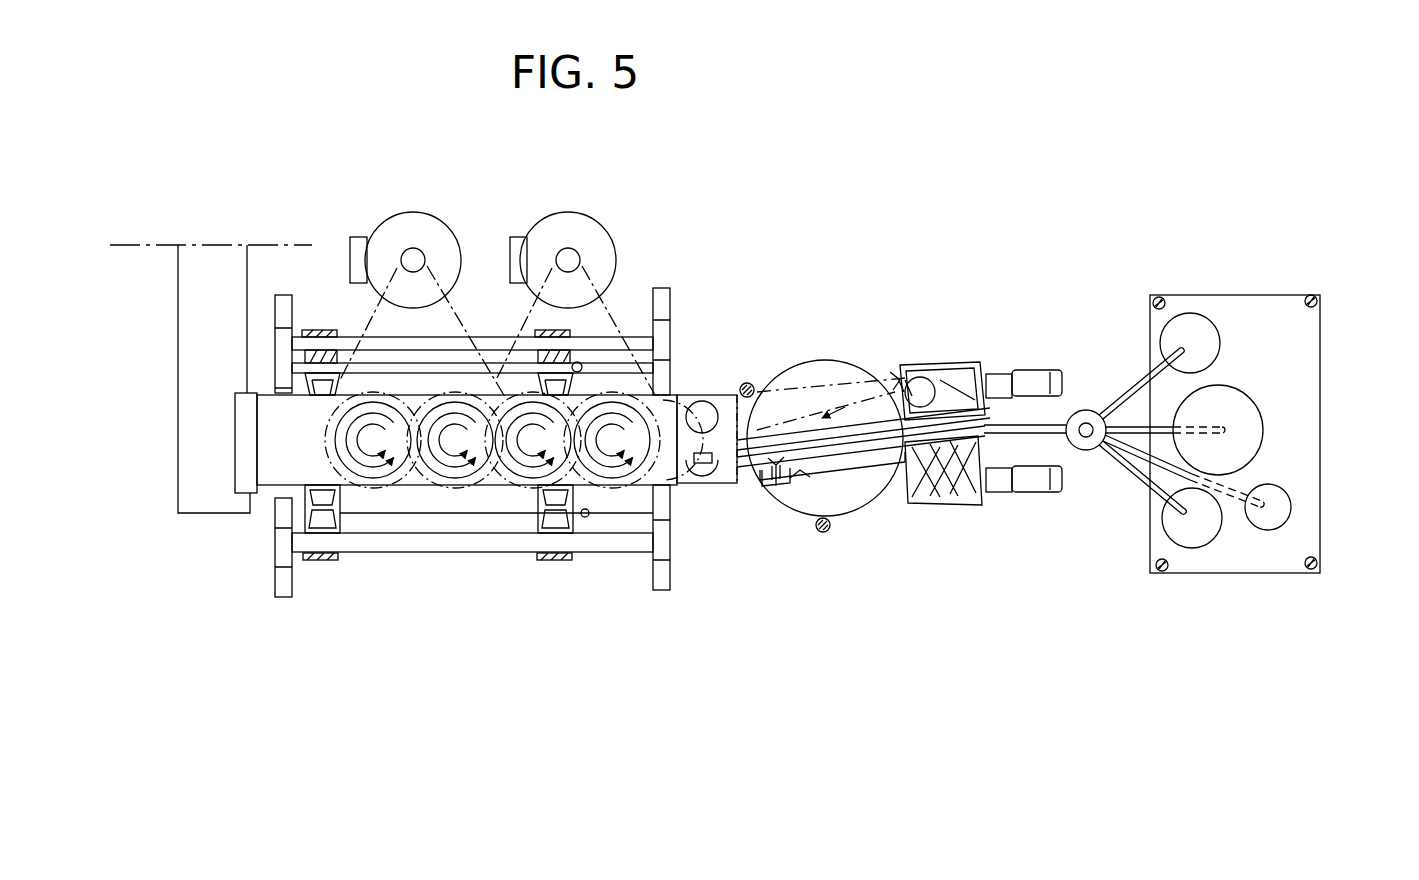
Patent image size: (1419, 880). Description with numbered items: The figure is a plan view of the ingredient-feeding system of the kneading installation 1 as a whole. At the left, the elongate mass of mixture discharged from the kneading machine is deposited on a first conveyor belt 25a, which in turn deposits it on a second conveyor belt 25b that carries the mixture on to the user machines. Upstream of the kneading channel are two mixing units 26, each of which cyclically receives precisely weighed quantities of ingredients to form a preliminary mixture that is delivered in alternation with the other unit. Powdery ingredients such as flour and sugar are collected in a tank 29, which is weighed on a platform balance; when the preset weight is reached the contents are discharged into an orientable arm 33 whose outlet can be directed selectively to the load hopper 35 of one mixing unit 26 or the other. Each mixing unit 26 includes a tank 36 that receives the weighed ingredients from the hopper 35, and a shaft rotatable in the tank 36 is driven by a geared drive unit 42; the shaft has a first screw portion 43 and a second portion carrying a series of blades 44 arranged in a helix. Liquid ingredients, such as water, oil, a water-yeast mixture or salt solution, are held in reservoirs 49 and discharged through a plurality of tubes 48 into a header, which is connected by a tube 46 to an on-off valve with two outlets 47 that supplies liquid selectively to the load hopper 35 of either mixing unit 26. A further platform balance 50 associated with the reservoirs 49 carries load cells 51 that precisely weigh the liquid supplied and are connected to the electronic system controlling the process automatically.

The apparatus 1 is at (350, 208).
The first conveyor belt 25a is at (243, 478).
The second conveyor belt 25b is at (198, 458).
The mixing unit 26 is at (895, 443).
The tank 29 is at (793, 362).
The orientable arm 33 is at (857, 362).
The load hopper 35 is at (940, 500).
The tank 36 is at (852, 485).
The geared drive unit 42 is at (1045, 496).
The first screw portion 43 is at (972, 490).
The blades 44 is at (768, 488).
The tube 46 is at (1072, 410).
The on-off valve with two outlets 47 is at (996, 372).
The tubes 48 is at (1128, 390).
The reservoirs 49 is at (1247, 418).
The further platform balance 50 is at (1293, 368).
The load cells 51 is at (1302, 295).